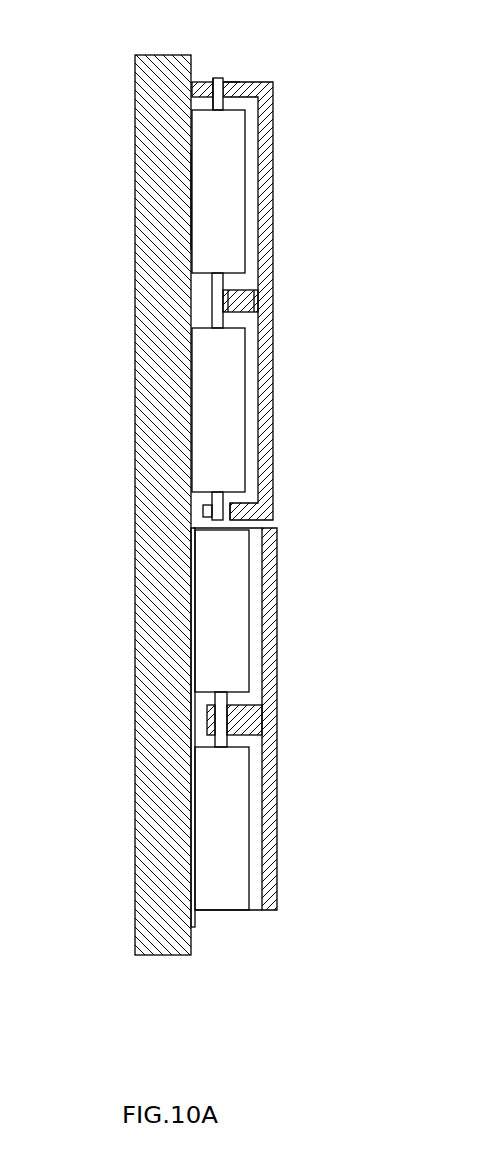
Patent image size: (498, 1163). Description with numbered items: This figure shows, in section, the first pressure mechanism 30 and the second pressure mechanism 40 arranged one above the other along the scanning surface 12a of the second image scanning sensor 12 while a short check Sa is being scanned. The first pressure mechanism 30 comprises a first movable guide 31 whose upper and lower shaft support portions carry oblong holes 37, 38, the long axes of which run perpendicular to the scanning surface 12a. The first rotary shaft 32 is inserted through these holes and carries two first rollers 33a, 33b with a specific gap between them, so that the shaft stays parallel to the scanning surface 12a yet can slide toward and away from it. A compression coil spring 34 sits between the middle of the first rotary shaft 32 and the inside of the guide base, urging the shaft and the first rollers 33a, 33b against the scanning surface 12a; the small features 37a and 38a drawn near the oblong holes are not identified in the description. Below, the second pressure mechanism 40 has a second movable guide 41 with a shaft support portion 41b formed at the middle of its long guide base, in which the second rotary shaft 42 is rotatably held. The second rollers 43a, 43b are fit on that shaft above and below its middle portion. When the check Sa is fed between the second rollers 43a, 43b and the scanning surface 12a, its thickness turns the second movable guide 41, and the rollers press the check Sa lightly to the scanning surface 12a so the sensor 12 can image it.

The second image scanning sensor 12 is at (145, 118).
The scanning surface 12a is at (199, 209).
The check Sa is at (194, 918).
The first pressure mechanism 30 is at (232, 260).
The first movable guide 31 is at (273, 352).
The first rotary shaft 32 is at (222, 79).
The oblong hole 37 is at (214, 79).
The slot edge 37a is at (227, 82).
The first roller 33a is at (230, 188).
The first roller 33b is at (218, 408).
The compression coil spring 34 is at (240, 293).
The oblong hole 38 is at (215, 499).
The lower pin seat 38a is at (232, 501).
The second pressure mechanism 40 is at (225, 719).
The second movable guide 41 is at (272, 670).
The shaft support portion 41b is at (272, 697).
The second rotary shaft 42 is at (220, 721).
The second roller 43a is at (210, 590).
The second roller 43b is at (210, 818).